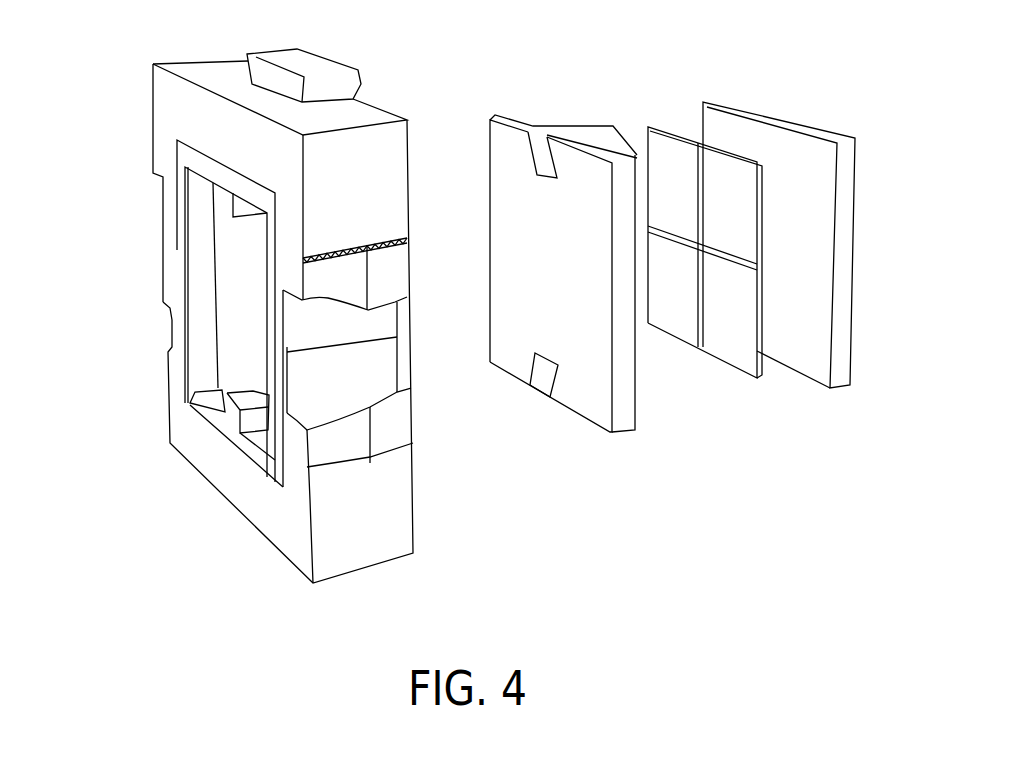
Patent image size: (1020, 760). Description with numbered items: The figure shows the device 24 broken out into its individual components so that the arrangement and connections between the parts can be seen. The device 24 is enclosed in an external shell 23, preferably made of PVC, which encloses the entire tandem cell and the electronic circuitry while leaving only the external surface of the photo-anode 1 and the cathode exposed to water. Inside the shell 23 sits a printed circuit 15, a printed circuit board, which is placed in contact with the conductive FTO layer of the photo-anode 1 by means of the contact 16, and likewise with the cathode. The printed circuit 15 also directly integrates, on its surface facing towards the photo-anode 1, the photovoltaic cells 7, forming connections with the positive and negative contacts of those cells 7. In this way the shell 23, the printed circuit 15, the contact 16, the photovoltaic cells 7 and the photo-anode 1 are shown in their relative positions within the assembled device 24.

The photo-anode 1 is at (563, 280).
The photovoltaic cells 7 is at (720, 318).
The printed circuit 15 is at (783, 163).
The contact 16 is at (540, 147).
The external shell 23 is at (180, 123).
The device 24 is at (226, 320).